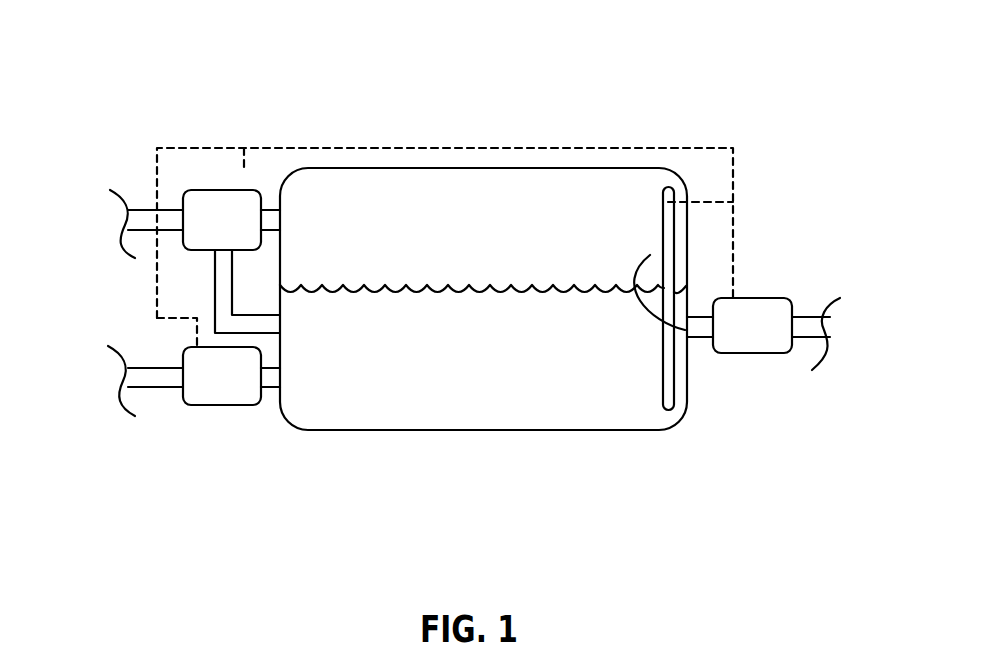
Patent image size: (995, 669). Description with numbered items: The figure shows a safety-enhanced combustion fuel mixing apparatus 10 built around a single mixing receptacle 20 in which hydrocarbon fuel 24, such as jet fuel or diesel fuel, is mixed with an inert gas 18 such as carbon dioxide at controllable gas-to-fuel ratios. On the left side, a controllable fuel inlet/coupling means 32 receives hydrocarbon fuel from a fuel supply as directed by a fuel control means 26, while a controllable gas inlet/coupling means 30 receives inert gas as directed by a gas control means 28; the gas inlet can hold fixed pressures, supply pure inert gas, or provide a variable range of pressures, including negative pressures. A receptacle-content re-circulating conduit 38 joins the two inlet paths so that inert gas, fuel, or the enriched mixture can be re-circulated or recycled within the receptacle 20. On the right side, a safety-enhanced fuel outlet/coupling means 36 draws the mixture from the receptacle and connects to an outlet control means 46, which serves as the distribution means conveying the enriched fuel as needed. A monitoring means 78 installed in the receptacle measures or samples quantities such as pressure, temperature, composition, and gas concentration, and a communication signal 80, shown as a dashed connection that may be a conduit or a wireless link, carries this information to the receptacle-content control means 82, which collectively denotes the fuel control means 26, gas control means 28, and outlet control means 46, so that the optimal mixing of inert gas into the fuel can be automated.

The mixing apparatus 10 is at (128, 103).
The inert gas 18 is at (577, 192).
The mixing receptacle 20 is at (633, 430).
The fuel 24 is at (557, 410).
The fuel control means 26 is at (208, 190).
The gas control means 28 is at (200, 405).
The gas inlet/coupling means 30 is at (280, 375).
The fuel inlet/coupling means 32 is at (280, 220).
The fuel outlet/coupling means 36 is at (650, 255).
The receptacle-content re-circulating conduit 38 is at (263, 325).
The outlet control means 46 is at (772, 347).
The monitoring means 78 is at (677, 387).
The communication signal 80 is at (245, 170).
The receptacle-content control means 82 is at (220, 203).